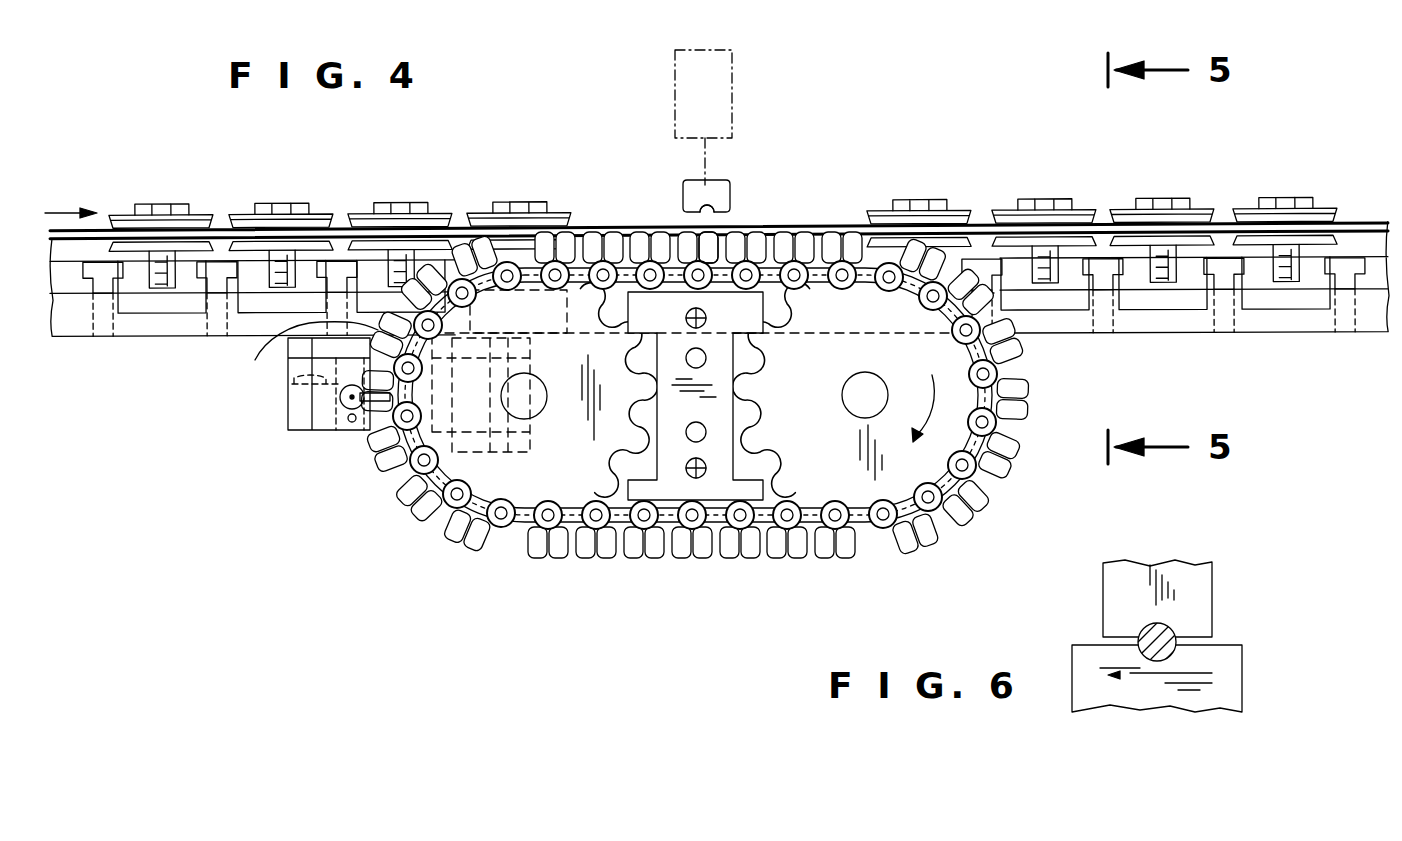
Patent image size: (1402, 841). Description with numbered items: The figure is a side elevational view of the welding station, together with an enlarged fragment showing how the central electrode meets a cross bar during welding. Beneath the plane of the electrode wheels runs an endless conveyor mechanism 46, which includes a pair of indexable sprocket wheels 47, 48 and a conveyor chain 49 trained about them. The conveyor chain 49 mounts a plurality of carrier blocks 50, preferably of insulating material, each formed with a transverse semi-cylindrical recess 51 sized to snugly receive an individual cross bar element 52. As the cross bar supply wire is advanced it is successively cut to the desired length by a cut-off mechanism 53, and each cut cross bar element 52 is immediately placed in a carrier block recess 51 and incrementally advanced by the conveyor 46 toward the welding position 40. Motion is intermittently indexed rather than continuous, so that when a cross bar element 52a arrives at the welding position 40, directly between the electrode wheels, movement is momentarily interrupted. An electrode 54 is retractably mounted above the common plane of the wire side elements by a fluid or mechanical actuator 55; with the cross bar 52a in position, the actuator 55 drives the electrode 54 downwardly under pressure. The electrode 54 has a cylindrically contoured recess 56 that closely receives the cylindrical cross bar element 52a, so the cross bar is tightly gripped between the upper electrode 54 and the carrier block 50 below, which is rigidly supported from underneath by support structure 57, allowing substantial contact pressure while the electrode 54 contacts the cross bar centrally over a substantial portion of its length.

In FIG. 4, the welding position 40 is at (719, 125).
In FIG. 4, the endless conveyor mechanism 46 is at (822, 428).
In FIG. 4, the indexable sprocket wheel 47 is at (518, 485).
In FIG. 4, the indexable sprocket wheel 48 is at (862, 495).
In FIG. 4, the conveyor chain 49 is at (699, 395).
In FIG. 4, the carrier block 50 is at (1012, 488).
In FIG. 6, the carrier block 50 is at (1215, 681).
In FIG. 4, the semi-cylindrical recess 51 is at (1020, 452).
In FIG. 4, the cross bar element 52 is at (256, 358).
In FIG. 4, the cross bar element 52a is at (730, 225).
In FIG. 6, the cross bar element 52a is at (1172, 630).
In FIG. 4, the cut-off mechanism 53 is at (300, 413).
In FIG. 4, the electrode 54 is at (733, 193).
In FIG. 6, the electrode 54 is at (1195, 583).
In FIG. 4, the actuator 55 is at (732, 92).
In FIG. 4, the cylindrically contoured recess 56 is at (700, 214).
In FIG. 4, the support structure 57 is at (727, 308).